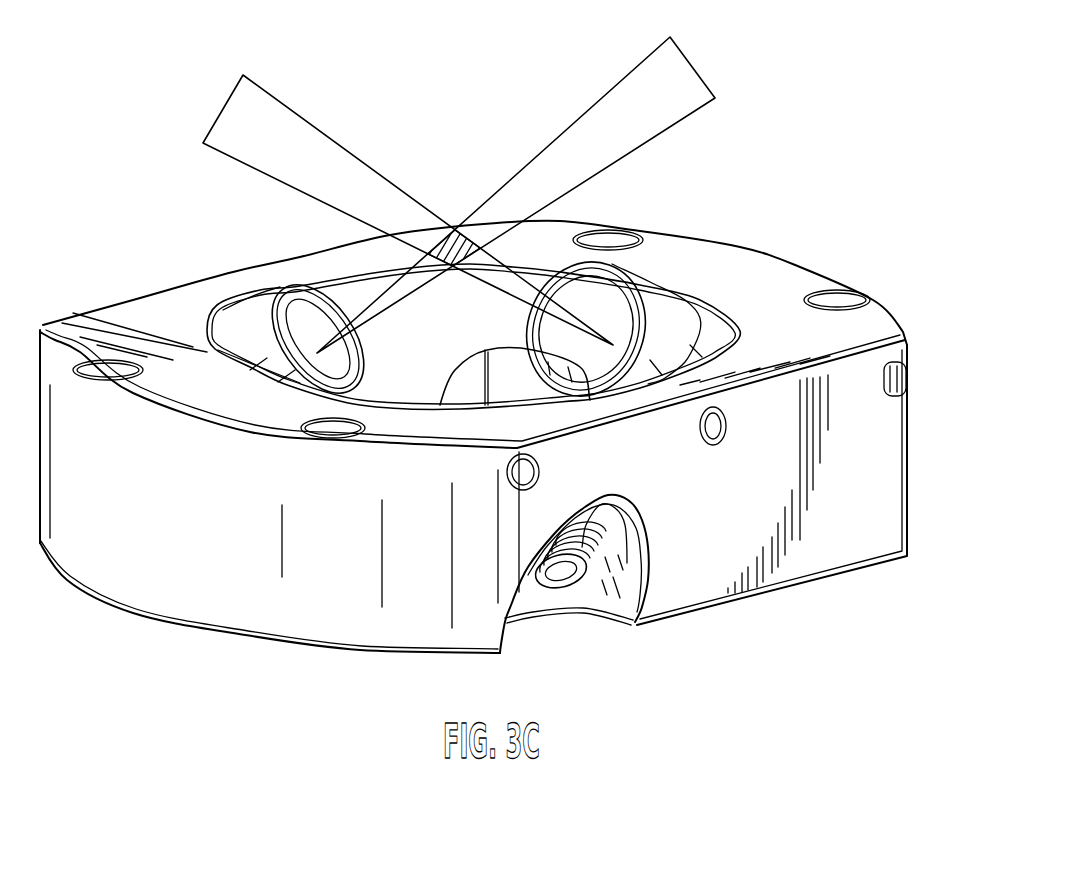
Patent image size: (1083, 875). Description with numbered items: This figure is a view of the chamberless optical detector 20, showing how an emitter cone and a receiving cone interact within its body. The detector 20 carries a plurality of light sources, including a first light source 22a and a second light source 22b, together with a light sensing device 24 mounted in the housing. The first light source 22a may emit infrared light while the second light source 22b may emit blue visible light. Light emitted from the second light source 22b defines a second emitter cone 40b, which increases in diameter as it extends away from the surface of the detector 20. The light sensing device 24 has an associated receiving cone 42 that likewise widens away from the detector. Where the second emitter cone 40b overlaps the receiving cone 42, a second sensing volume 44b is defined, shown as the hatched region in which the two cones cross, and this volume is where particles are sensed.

The detector 20 is at (143, 310).
The first light source 22a is at (503, 365).
The second light source 22b is at (250, 328).
The light sensing device 24 is at (660, 317).
The receiving cone 42 is at (342, 162).
The second emitter cone 40b is at (683, 72).
The second sensing volume 44b is at (463, 220).